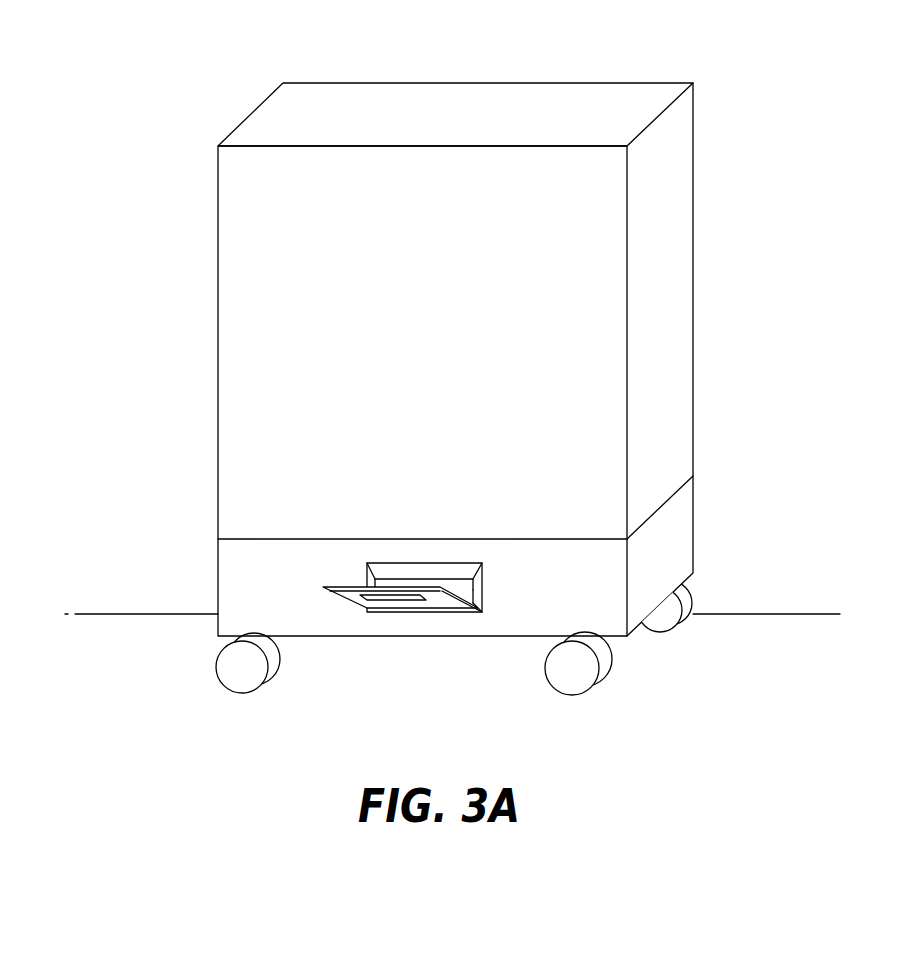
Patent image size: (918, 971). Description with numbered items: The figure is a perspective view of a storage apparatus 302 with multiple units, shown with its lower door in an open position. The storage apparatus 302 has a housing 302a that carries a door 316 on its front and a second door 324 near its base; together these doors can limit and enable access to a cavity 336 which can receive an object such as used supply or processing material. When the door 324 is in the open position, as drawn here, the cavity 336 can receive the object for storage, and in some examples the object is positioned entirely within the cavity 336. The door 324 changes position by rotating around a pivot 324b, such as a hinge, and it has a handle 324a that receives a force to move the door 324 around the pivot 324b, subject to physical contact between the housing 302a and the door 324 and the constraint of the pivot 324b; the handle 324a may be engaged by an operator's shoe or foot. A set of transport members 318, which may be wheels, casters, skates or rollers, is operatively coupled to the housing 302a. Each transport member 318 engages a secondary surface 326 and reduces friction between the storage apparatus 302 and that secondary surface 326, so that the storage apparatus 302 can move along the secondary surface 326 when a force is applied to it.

The storage apparatus 302 is at (399, 324).
The housing 302a is at (350, 95).
The door 316 is at (257, 317).
The transport member 318 is at (225, 673).
The door 324 is at (402, 651).
The handle 324a is at (390, 603).
The pivot 324b is at (466, 610).
The secondary surface 326 is at (120, 703).
The cavity 336 is at (440, 585).